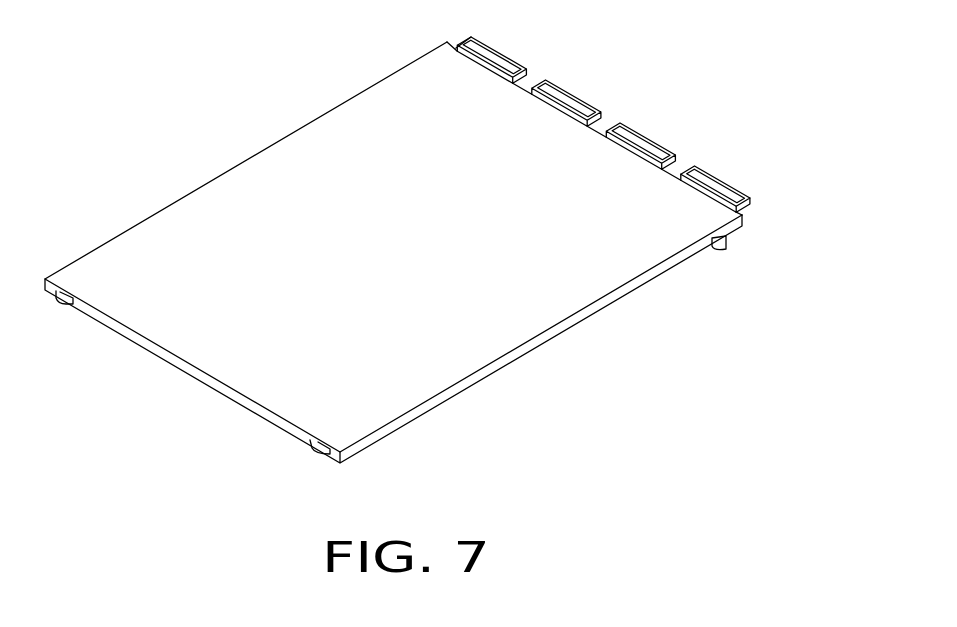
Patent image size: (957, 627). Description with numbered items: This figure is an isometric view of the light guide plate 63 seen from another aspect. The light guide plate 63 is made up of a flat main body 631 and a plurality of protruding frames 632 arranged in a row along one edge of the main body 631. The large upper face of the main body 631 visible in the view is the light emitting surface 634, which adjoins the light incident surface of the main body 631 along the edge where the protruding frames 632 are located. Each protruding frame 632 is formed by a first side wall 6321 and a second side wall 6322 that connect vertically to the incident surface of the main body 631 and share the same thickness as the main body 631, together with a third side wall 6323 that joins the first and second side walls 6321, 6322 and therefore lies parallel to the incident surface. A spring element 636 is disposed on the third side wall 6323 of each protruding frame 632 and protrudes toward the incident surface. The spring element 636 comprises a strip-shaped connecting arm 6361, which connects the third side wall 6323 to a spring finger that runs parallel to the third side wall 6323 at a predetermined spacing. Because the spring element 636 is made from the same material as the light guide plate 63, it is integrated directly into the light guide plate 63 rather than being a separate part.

The light guide plate 63 is at (562, 361).
The main body 631 is at (675, 260).
The protruding frame 632 is at (526, 77).
The first side wall 6321 is at (746, 212).
The second side wall 6322 is at (688, 166).
The third side wall 6323 is at (720, 180).
The light emitting surface 634 is at (458, 353).
The spring element 636 is at (509, 56).
The connecting arm 6361 is at (492, 42).